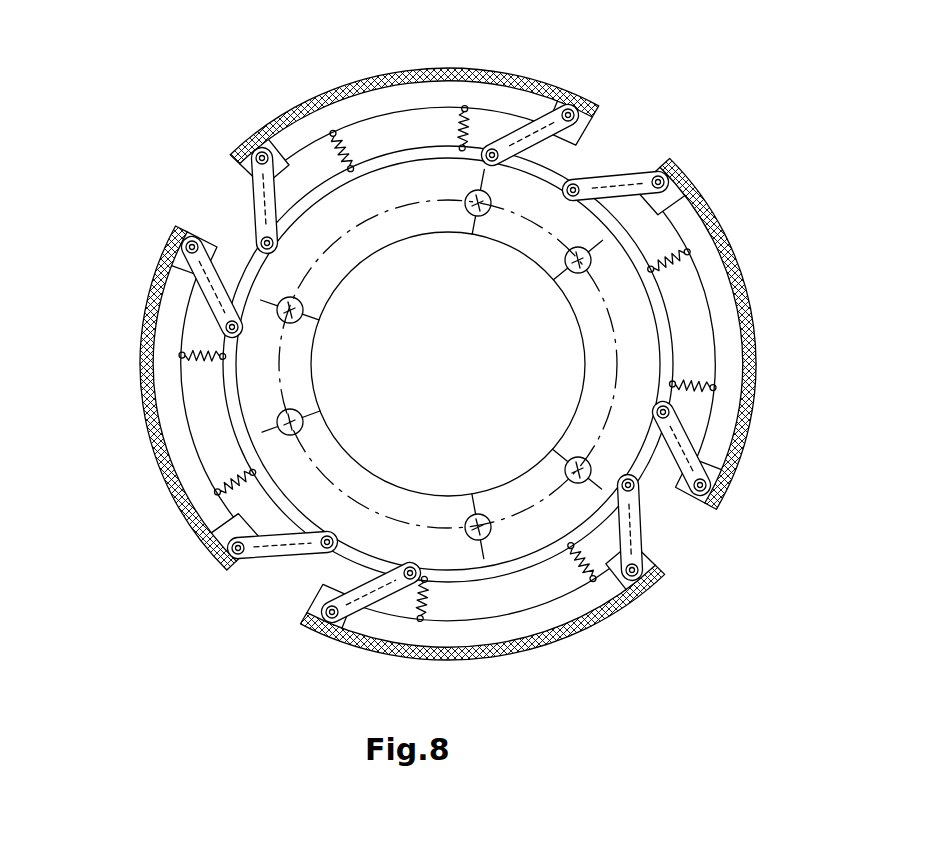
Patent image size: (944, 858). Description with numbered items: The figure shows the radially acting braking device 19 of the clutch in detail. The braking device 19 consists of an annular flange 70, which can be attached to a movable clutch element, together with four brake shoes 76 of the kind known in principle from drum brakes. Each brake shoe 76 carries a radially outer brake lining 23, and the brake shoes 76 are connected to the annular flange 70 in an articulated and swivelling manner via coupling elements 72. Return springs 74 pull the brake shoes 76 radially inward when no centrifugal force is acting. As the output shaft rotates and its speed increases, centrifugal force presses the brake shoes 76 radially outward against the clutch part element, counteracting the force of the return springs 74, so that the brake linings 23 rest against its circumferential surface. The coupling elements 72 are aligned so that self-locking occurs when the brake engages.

The braking device 19 is at (672, 74).
The brake linings 23 is at (323, 92).
The annular flange 70 is at (323, 281).
The coupling elements 72 is at (237, 298).
The return springs 74 is at (205, 360).
The brake shoes 76 is at (185, 455).